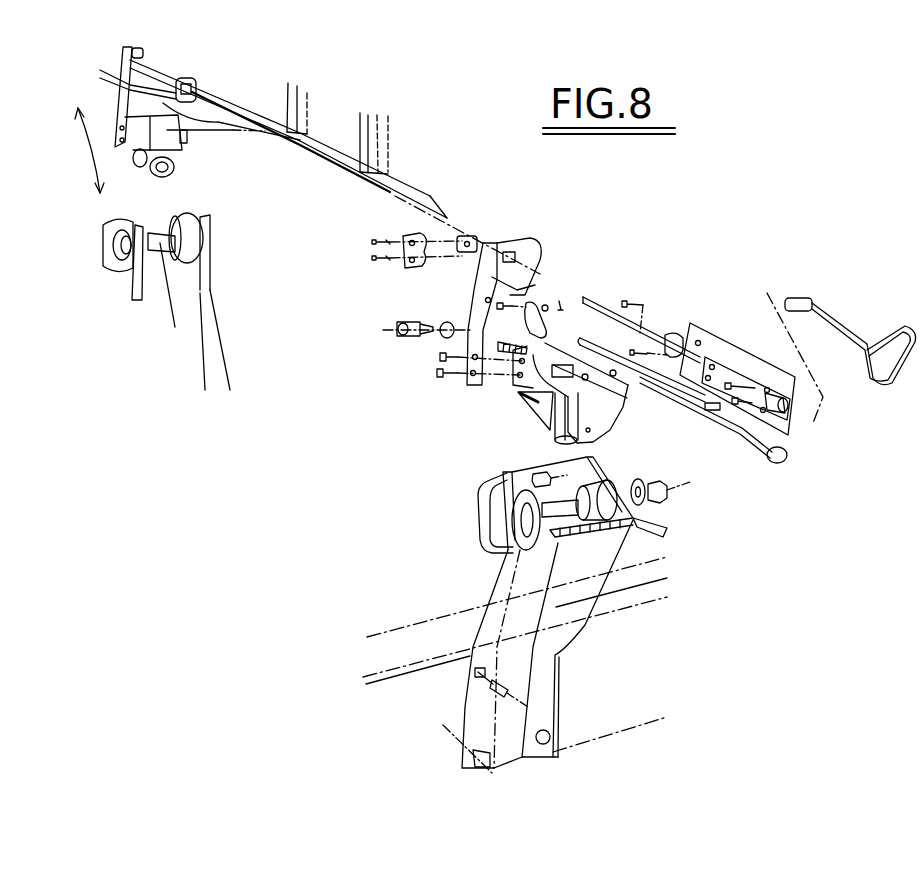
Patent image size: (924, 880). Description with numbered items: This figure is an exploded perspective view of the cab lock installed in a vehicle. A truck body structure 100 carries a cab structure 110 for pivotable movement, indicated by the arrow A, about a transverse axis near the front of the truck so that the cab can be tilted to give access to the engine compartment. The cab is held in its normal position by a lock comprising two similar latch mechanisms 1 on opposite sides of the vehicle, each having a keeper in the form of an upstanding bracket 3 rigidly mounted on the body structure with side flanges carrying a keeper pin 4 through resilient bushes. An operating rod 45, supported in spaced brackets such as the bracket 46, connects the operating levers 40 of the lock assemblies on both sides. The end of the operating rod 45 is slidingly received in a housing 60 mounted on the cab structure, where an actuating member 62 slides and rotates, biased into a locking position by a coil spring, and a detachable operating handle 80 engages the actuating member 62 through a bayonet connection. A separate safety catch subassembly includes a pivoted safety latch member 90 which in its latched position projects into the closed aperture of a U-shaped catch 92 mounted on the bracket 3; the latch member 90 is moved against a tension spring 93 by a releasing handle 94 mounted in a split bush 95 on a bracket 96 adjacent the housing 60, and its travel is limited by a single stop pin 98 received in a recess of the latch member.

The latch mechanism 1 is at (197, 156).
The upstanding bracket 3 is at (208, 230).
The keeper pin 4 is at (157, 227).
The operating lever 40 is at (144, 56).
The operating rod 45 is at (301, 156).
The bracket 46 is at (197, 80).
The housing 60 is at (727, 358).
The actuating member 62 is at (786, 408).
The operating handle 80 is at (853, 307).
The safety latch member 90 is at (537, 407).
The U-shaped catch 92 is at (487, 520).
The tension spring 93 is at (509, 378).
The releasing handle 94 is at (779, 464).
The split bush 95 is at (713, 408).
The bracket 96 is at (675, 334).
The stop pin 98 is at (575, 338).
The truck body structure 100 is at (411, 634).
The cab structure 110 is at (330, 100).
The arrow A is at (84, 150).